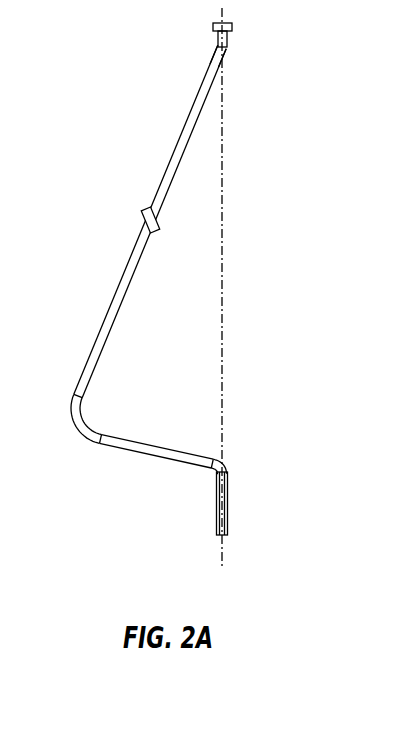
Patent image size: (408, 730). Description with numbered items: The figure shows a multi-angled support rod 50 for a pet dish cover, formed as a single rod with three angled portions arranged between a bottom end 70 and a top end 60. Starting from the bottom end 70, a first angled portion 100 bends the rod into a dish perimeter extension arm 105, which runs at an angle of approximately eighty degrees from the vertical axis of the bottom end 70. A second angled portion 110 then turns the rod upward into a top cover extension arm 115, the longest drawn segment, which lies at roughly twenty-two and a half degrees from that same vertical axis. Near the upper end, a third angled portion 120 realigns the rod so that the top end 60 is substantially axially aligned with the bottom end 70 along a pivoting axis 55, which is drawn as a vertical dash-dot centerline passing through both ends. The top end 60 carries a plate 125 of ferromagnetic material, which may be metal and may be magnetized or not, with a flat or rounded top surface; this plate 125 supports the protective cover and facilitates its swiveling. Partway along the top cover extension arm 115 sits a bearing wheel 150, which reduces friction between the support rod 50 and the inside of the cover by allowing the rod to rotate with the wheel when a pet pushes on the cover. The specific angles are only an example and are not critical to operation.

The support rod 50 is at (150, 168).
The pivoting axis 55 is at (222, 287).
The top end 60 is at (227, 36).
The bottom end 70 is at (222, 535).
The first angled portion 100 is at (225, 455).
The dish perimeter extension arm 105 is at (153, 447).
The second angled portion 110 is at (75, 425).
The top cover extension arm 115 is at (117, 302).
The third angled portion 120 is at (230, 50).
The plate 125 is at (230, 25).
The bearing wheel 150 is at (133, 218).